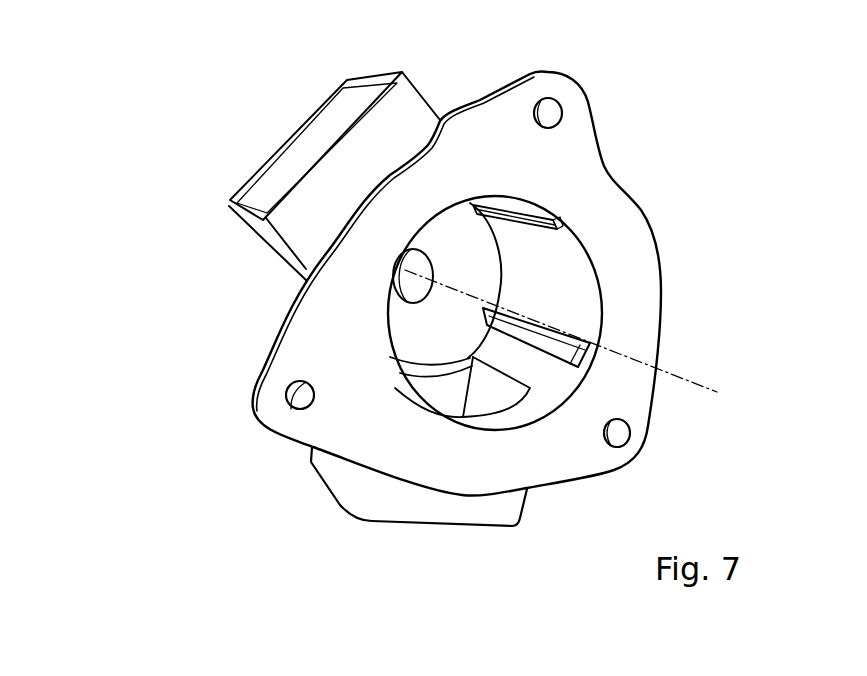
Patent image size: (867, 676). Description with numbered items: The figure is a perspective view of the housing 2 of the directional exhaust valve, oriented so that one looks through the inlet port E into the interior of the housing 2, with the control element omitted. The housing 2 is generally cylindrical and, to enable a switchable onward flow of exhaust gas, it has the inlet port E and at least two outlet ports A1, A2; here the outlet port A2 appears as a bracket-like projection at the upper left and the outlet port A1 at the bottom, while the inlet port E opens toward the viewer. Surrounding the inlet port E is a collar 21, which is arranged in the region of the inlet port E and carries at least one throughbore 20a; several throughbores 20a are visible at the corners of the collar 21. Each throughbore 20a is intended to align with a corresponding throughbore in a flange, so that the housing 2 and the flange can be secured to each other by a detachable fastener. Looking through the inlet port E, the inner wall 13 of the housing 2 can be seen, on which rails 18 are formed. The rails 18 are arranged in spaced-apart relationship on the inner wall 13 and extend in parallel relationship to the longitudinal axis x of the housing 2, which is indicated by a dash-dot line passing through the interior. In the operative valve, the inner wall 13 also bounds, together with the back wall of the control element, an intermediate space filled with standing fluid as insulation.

The housing 2 is at (446, 312).
The collar 21 is at (310, 352).
The throughbore 20a is at (553, 113).
The rail 18 is at (525, 206).
The inner wall 13 is at (533, 280).
The inlet port E is at (565, 298).
The outlet port A2 is at (307, 162).
The outlet port A1 is at (433, 532).
The longitudinal axis x is at (572, 337).